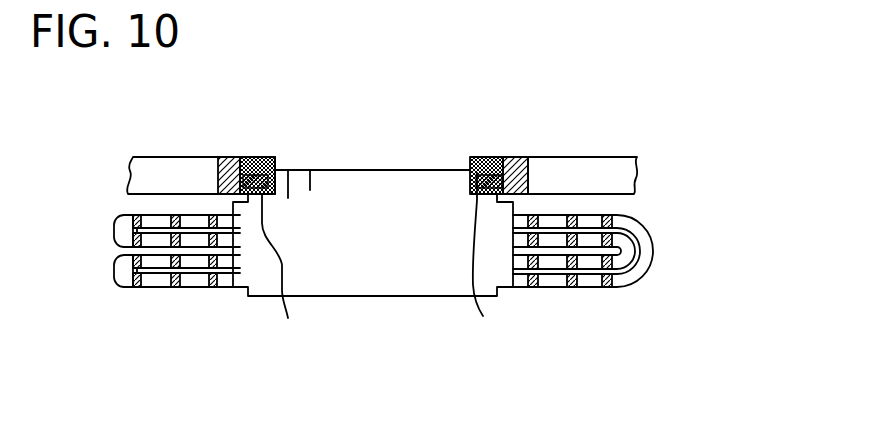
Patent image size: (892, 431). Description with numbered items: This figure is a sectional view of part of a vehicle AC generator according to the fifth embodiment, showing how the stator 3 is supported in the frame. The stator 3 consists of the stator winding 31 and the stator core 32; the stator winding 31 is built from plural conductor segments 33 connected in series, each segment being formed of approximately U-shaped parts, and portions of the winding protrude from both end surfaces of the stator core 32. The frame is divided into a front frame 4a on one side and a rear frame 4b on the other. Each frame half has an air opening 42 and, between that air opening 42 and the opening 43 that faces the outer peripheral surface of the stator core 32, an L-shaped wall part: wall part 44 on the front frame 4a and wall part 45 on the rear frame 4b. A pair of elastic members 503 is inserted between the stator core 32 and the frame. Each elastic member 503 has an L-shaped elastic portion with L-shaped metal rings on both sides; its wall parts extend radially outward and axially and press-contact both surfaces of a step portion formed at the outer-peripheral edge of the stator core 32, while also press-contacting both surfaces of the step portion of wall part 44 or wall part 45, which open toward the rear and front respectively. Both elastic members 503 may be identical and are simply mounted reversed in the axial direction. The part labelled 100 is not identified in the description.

The stator 3 is at (575, 300).
The front frame 4a is at (197, 147).
The rear frame 4b is at (541, 146).
The stator winding 31 is at (108, 274).
The stator core 32 is at (420, 265).
The conductor segments 33 is at (625, 275).
The air openings 42 is at (155, 178).
The opening 43 is at (382, 146).
The wall part 44 is at (225, 157).
The wall part 45 is at (511, 188).
The wire 100 is at (392, 263).
The elastic member 503 is at (265, 148).